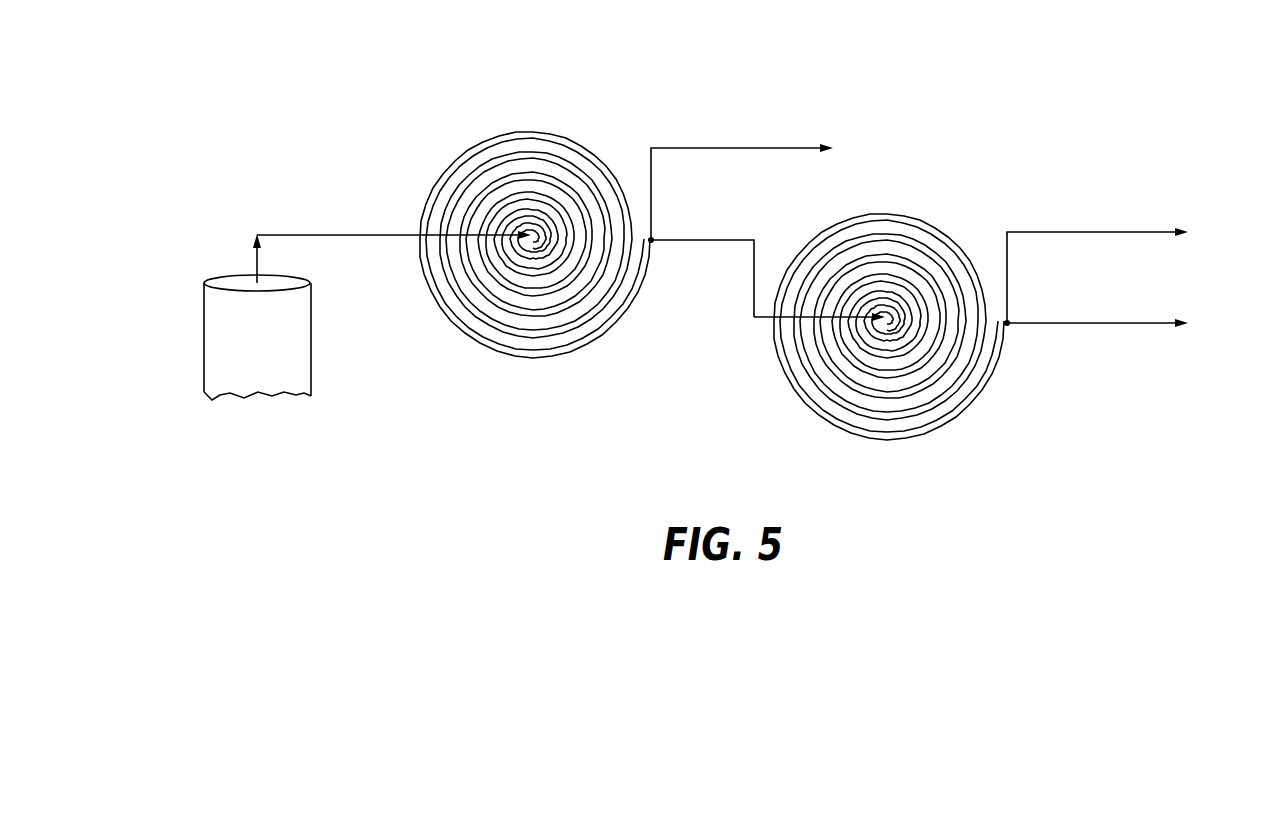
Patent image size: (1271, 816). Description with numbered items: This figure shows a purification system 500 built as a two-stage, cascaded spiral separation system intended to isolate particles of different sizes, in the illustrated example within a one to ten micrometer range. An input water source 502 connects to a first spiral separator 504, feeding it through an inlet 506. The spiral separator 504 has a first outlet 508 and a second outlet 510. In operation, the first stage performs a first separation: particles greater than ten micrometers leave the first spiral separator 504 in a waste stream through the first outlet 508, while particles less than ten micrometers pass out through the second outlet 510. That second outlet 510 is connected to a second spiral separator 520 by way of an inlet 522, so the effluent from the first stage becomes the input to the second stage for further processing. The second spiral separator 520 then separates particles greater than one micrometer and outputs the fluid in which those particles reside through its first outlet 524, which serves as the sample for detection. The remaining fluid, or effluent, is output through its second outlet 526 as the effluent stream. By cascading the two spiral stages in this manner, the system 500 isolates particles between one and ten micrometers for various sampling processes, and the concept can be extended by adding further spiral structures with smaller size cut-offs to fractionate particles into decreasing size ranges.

The purification system 500 is at (909, 68).
The input water source 502 is at (312, 358).
The spiral separator 504 is at (493, 142).
The inlet 506 is at (324, 237).
The first outlet 508 is at (735, 151).
The second outlet 510 is at (735, 244).
The second spiral separator 520 is at (928, 224).
The inlet 522 is at (772, 319).
The first outlet 524 is at (1088, 236).
The second outlet 526 is at (1088, 327).